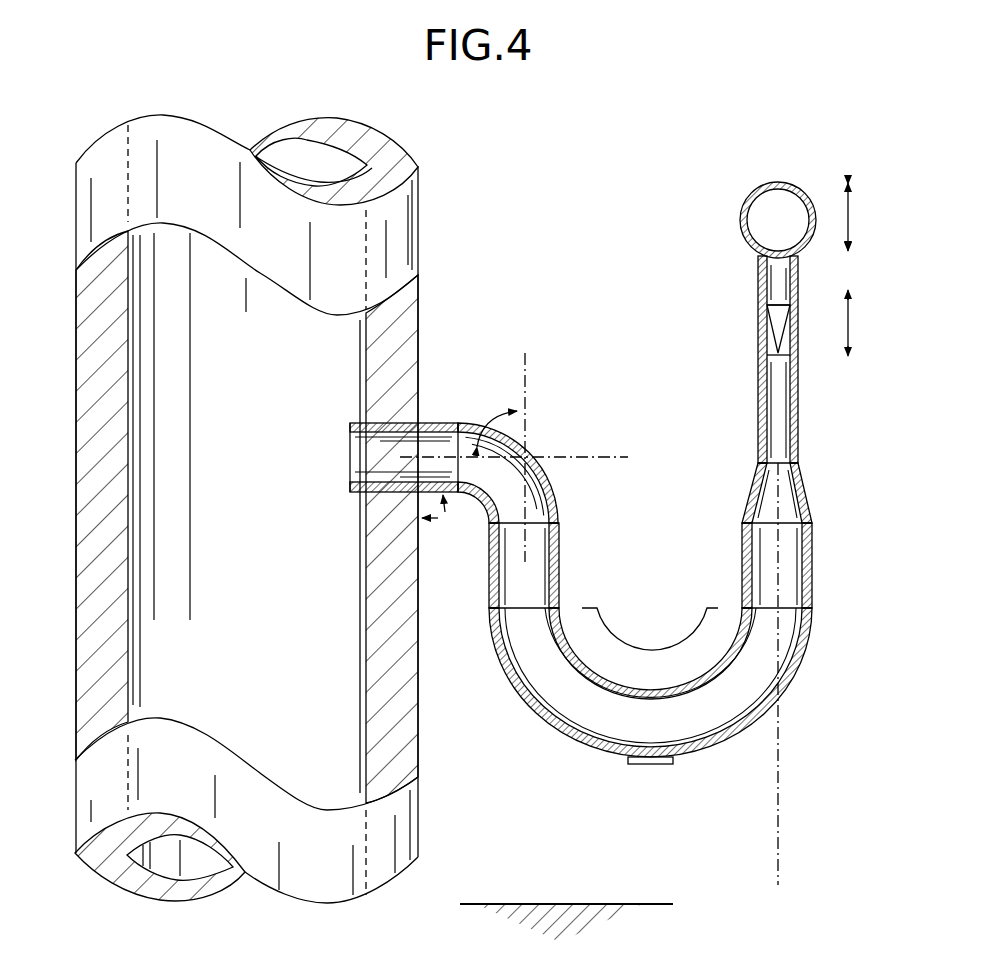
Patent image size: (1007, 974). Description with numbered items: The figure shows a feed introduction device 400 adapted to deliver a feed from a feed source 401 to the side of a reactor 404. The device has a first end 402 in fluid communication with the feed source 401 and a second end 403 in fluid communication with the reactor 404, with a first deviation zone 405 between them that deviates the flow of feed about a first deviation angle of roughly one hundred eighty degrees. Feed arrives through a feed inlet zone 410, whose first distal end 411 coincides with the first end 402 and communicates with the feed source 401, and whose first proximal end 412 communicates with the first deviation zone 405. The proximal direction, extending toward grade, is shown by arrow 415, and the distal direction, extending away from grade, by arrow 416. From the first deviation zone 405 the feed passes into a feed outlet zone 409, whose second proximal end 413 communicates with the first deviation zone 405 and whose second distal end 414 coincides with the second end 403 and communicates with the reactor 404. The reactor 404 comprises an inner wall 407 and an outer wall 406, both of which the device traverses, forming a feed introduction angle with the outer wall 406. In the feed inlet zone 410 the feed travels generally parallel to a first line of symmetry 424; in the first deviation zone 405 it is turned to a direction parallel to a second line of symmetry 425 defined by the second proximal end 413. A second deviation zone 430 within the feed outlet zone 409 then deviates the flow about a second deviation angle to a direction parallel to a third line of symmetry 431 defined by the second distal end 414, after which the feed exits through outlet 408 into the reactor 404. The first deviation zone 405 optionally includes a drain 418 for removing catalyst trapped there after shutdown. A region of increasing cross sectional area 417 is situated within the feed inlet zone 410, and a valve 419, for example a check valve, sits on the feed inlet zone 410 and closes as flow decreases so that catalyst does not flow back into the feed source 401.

The feed introduction device 400 is at (596, 173).
The feed source 401 is at (742, 218).
The first end 402 is at (702, 359).
The first distal end 411 is at (758, 288).
The second end 403 is at (342, 489).
The second distal end 414 is at (350, 493).
The reactor 404 is at (469, 302).
The first deviation zone 405 is at (652, 646).
The outer wall 406 is at (420, 362).
The inner wall 407 is at (361, 382).
The outlet 408 is at (350, 460).
The feed outlet zone 409 is at (438, 421).
The feed inlet zone 410 is at (758, 437).
The first proximal end 412 is at (814, 572).
The second proximal end 413 is at (560, 571).
The arrow indicating proximal direction 415 is at (849, 325).
The arrow indicating distal direction 416 is at (849, 228).
The region of increasing cross sectional area 417 is at (812, 507).
The drain 418 is at (650, 765).
The valve 419 is at (775, 325).
The first line of symmetry 424 is at (778, 850).
The second line of symmetry 425 is at (525, 355).
The second deviation zone 430 is at (462, 504).
The third line of symmetry 431 is at (580, 452).